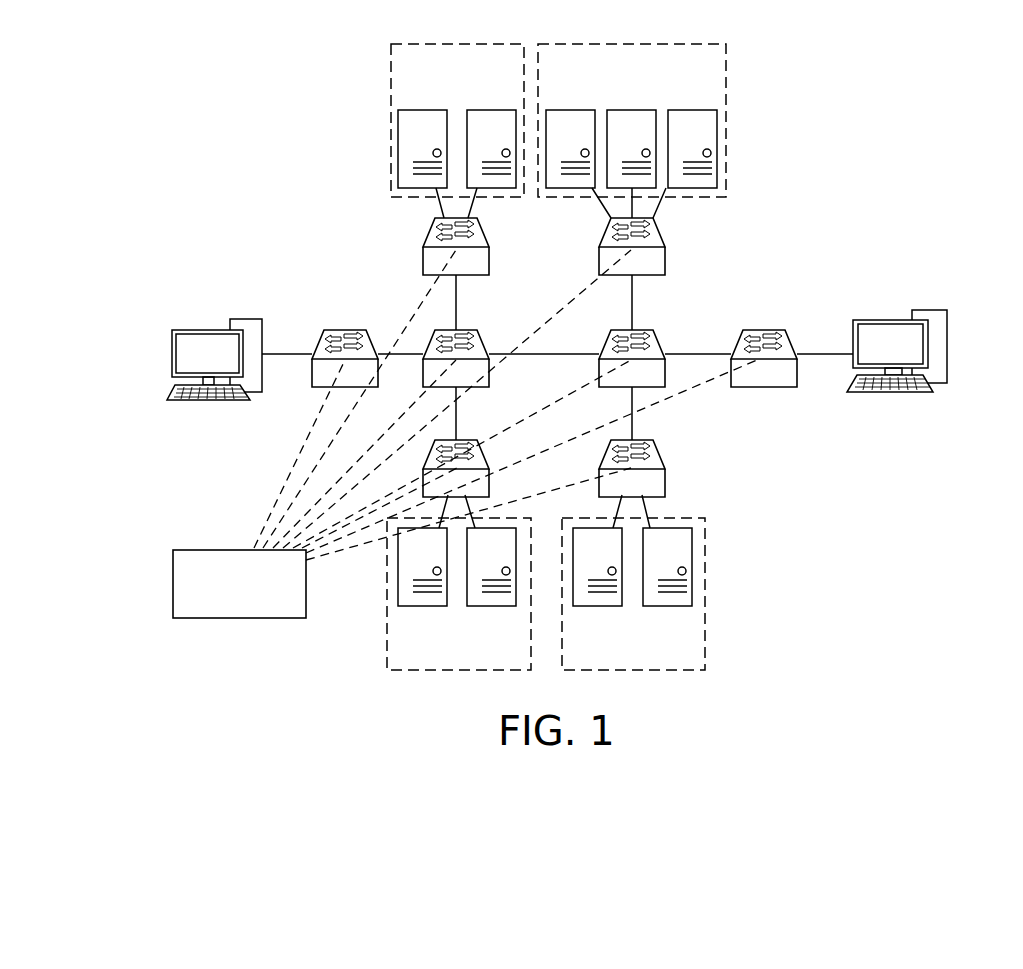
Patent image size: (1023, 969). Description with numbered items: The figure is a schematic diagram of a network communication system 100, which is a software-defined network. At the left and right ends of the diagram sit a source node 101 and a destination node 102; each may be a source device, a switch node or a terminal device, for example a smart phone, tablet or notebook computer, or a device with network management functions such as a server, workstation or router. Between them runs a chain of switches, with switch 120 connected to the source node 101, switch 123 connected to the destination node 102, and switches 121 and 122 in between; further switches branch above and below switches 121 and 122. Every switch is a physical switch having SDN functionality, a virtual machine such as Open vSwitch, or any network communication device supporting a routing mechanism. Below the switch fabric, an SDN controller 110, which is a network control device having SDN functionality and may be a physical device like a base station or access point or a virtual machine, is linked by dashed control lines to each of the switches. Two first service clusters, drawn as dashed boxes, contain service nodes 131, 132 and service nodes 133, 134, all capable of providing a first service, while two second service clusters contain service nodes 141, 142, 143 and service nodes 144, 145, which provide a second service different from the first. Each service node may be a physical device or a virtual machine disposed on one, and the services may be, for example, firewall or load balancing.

The network communication system 100 is at (966, 664).
The source node 101 is at (209, 330).
The destination node 102 is at (893, 320).
The SDN controller 110 is at (210, 550).
The switch 120 is at (347, 330).
The switch 121 is at (479, 322).
The switch 122 is at (653, 325).
The switch 123 is at (765, 325).
The service node 131 is at (424, 110).
The service node 132 is at (492, 110).
The service node 133 is at (423, 606).
The service node 134 is at (493, 606).
The service node 141 is at (570, 110).
The service node 142 is at (632, 110).
The service node 143 is at (695, 110).
The service node 144 is at (600, 606).
The service node 145 is at (670, 606).